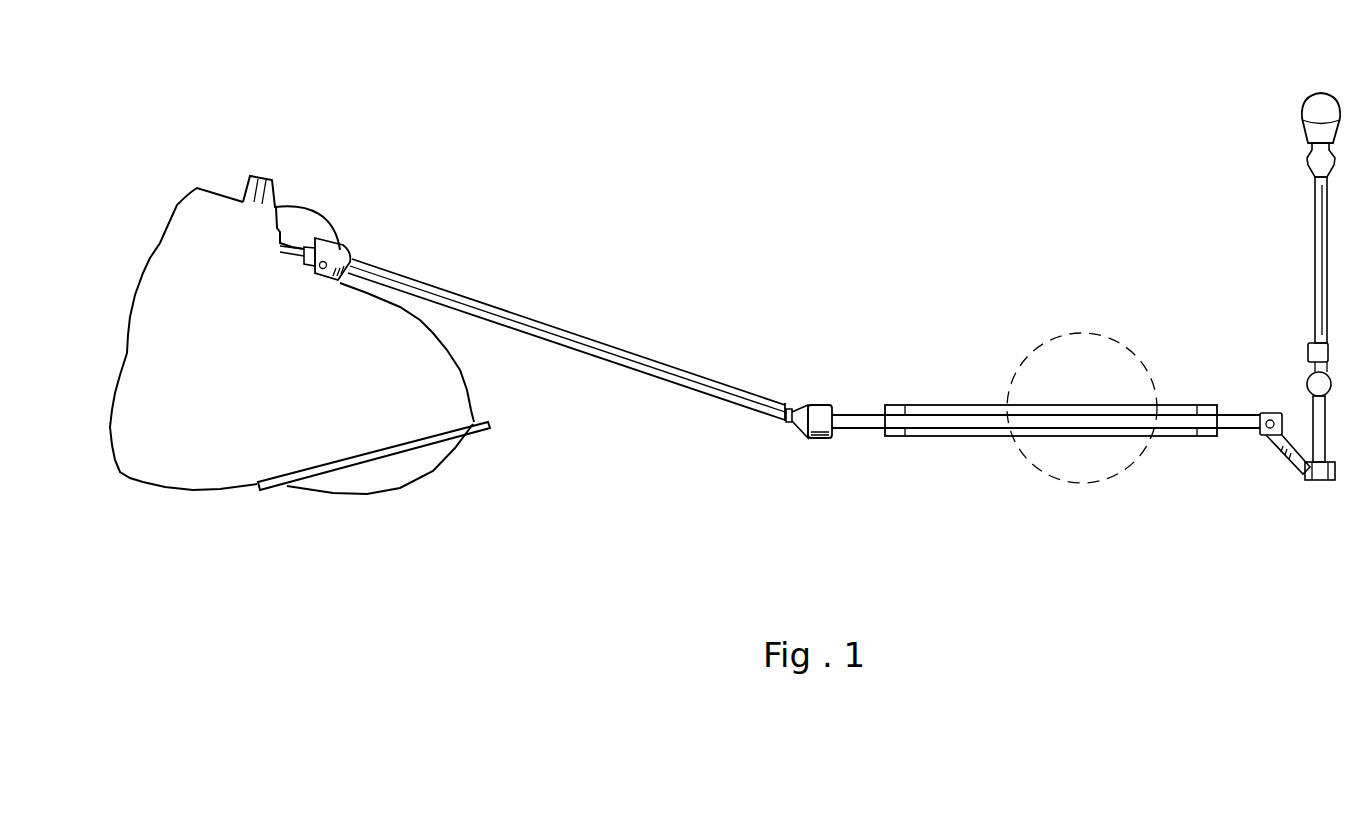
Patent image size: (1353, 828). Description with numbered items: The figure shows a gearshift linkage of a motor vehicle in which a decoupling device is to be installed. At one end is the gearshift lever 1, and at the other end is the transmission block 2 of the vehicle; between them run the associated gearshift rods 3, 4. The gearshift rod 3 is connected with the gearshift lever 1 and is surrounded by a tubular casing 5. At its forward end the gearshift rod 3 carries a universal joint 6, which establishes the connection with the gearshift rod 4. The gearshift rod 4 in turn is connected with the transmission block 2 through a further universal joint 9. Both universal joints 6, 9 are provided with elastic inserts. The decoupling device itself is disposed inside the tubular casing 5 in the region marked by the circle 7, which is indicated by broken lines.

The gearshift lever 1 is at (1316, 215).
The transmission block 2 is at (283, 270).
The gearshift rod 3 is at (865, 418).
The gearshift rod 4 is at (683, 380).
The tubular casing 5 is at (932, 432).
The universal joint 6 is at (820, 412).
The circle 7 is at (1042, 342).
The universal joint 9 is at (335, 250).